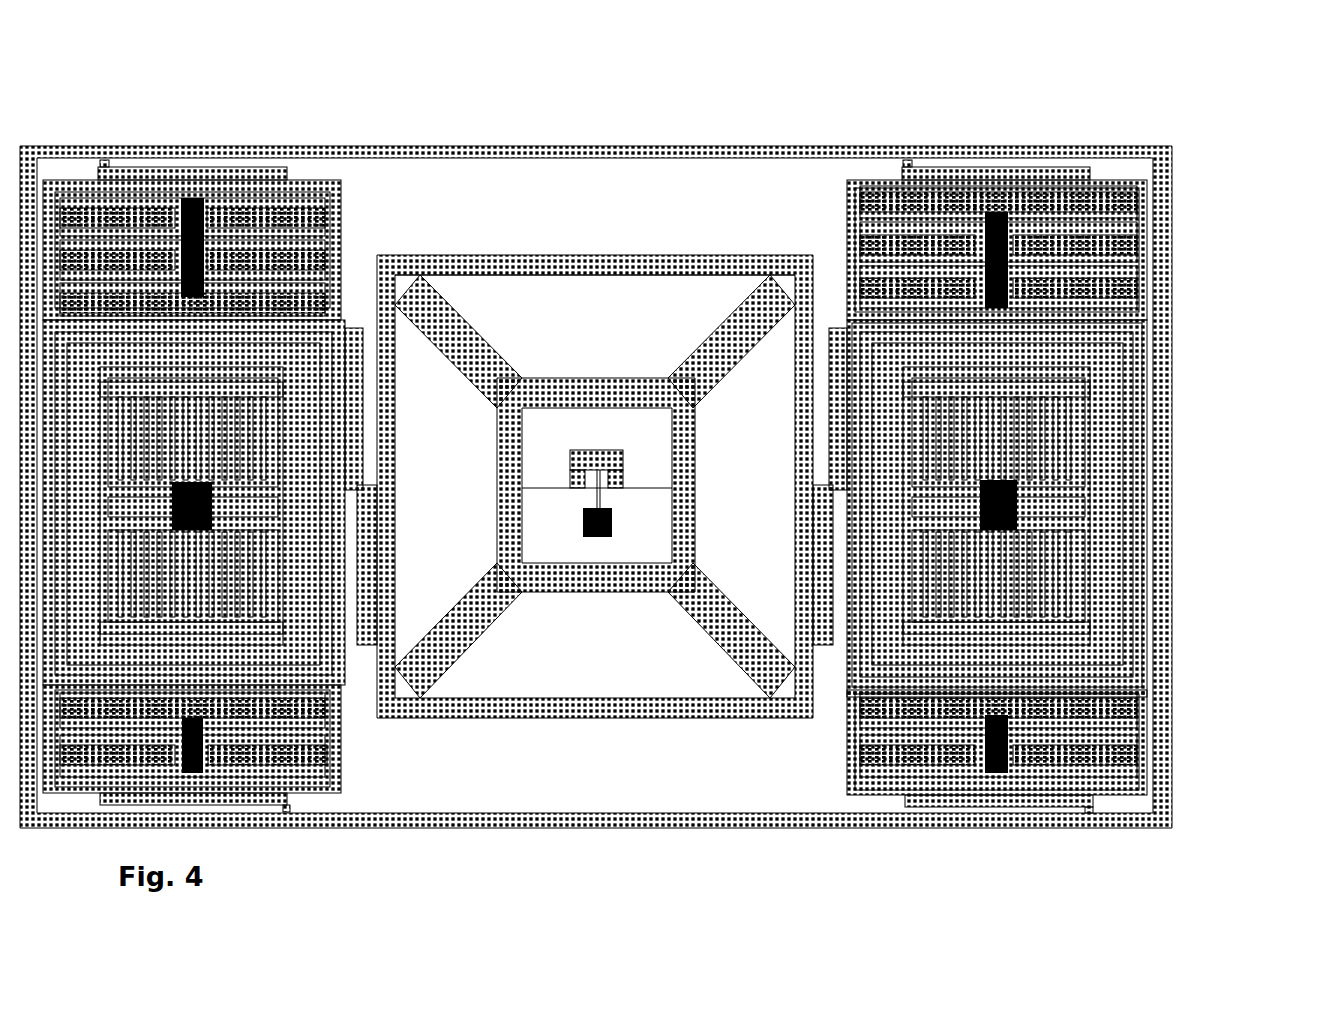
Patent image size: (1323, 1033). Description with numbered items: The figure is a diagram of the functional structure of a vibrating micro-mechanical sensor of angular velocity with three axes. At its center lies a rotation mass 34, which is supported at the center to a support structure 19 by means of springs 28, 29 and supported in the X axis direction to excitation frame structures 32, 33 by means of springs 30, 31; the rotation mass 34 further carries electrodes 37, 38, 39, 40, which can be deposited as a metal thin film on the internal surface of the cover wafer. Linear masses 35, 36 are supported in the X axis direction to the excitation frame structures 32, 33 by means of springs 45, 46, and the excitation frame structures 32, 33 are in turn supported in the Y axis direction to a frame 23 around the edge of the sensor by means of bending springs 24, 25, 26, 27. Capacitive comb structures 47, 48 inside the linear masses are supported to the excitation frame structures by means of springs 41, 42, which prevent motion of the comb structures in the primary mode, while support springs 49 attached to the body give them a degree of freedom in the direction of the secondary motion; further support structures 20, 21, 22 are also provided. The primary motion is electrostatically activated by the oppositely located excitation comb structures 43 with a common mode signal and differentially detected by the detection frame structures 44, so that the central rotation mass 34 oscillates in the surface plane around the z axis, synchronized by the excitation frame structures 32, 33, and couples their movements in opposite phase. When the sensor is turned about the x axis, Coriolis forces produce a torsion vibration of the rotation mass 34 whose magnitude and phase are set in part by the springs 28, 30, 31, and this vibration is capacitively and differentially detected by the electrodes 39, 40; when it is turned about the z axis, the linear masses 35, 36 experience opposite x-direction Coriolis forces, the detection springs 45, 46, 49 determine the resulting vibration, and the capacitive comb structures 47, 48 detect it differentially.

The support structure 19 is at (642, 292).
The support structure 20 is at (1149, 260).
The support structure 21 is at (1147, 476).
The support structure 22 is at (1149, 748).
The frame 23 is at (192, 113).
The bending spring 24 is at (193, 172).
The bending spring 25 is at (192, 429).
The bending spring 26 is at (996, 113).
The bending spring 27 is at (1109, 798).
The spring 28 is at (606, 277).
The spring 29 is at (596, 267).
The spring 30 is at (372, 346).
The spring 31 is at (839, 346).
The excitation frame structure 32 is at (192, 183).
The excitation frame structure 33 is at (1080, 183).
The rotation mass 34 is at (595, 161).
The linear mass 35 is at (194, 366).
The linear mass 36 is at (1080, 508).
The electrode 37 is at (595, 382).
The electrode 38 is at (596, 319).
The electrode 39 is at (458, 372).
The electrode 40 is at (742, 372).
The spring 41 is at (1108, 490).
The spring 42 is at (1108, 619).
The excitation comb structure 43 is at (1087, 214).
The detection frame structure 44 is at (1080, 742).
The spring 45 is at (1087, 485).
The spring 46 is at (1093, 512).
The capacitive comb structure 47 is at (1113, 430).
The capacitive comb structure 48 is at (1113, 576).
The support spring 49 is at (1113, 493).